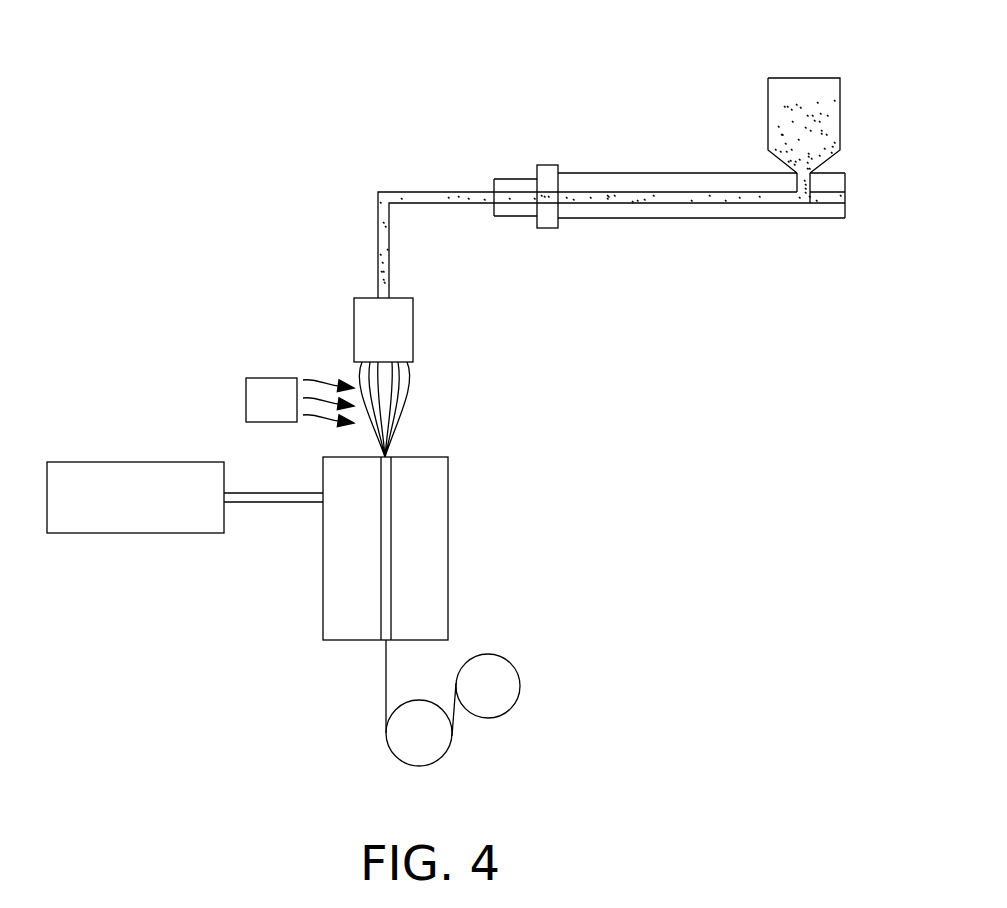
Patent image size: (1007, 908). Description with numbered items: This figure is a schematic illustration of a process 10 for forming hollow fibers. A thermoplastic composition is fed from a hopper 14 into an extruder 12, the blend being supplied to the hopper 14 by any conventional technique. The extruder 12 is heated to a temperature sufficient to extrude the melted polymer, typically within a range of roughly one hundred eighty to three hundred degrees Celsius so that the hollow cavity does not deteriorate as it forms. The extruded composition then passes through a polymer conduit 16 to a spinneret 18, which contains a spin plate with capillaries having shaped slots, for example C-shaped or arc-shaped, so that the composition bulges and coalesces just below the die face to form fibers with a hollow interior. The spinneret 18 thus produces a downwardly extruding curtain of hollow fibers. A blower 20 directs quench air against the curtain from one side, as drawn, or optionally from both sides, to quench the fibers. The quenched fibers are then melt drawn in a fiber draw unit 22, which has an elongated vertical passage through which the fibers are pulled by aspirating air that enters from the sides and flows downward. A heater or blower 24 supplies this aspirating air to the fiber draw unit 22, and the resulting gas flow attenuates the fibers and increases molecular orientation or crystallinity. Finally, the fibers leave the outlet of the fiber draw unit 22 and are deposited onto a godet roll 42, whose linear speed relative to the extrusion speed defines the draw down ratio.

The fiber production system 10 is at (258, 175).
The extruder 12 is at (610, 168).
The hopper 14 is at (800, 78).
The polymer conduit 16 is at (410, 193).
The spinneret 18 is at (398, 342).
The blower 20 is at (262, 388).
The fiber draw unit 22 is at (425, 453).
The heater or blower 24 is at (107, 460).
The godet roll 42 is at (492, 672).